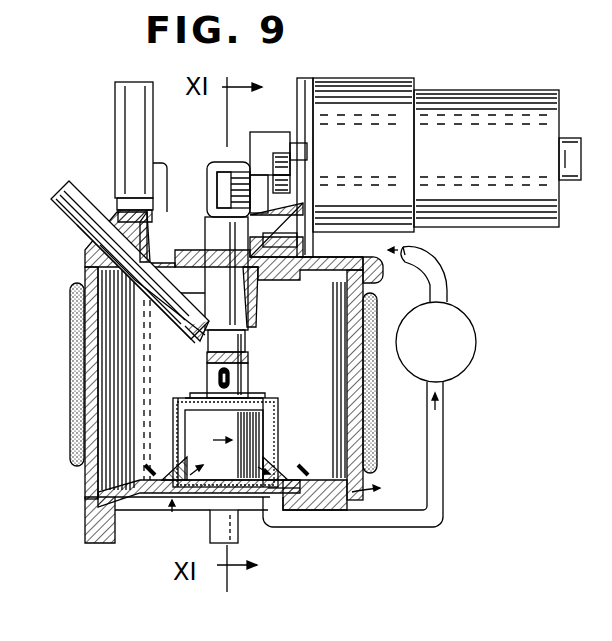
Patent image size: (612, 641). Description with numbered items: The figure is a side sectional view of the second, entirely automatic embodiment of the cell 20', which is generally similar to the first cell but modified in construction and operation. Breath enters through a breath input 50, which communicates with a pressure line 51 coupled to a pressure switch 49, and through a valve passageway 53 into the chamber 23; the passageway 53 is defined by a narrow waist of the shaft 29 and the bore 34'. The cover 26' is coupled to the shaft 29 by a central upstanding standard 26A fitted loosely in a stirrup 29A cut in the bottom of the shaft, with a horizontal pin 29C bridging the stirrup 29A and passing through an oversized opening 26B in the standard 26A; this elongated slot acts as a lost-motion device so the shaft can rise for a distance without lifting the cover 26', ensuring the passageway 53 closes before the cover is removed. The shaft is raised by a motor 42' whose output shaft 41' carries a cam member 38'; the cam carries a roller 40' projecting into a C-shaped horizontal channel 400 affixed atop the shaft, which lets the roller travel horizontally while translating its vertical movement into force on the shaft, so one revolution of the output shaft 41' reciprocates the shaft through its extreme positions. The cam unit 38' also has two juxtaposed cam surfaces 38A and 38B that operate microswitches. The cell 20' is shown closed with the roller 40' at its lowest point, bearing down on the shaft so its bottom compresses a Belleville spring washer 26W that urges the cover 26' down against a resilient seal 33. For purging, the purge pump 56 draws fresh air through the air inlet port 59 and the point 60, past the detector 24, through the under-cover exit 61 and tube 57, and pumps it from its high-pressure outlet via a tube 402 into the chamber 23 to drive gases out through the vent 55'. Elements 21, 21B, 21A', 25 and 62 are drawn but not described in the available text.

The pressure switch 49 is at (132, 99).
The breath input 50 is at (75, 193).
The pressure line 51 is at (96, 243).
The shaft 29 is at (168, 312).
The valve passageway 53 is at (196, 333).
The chamber 23 is at (107, 323).
The seal 62 is at (74, 452).
The automatic cell 20' is at (171, 511).
The bottom cover 21A' is at (177, 540).
The air inlet port 59 is at (165, 505).
The point 60 is at (190, 500).
The outlet 25 is at (230, 543).
The under-cover exit 61 is at (270, 505).
The resilient seal 33 is at (310, 505).
The vent 55' is at (353, 493).
The tube 57 is at (440, 402).
The purge pump 56 is at (470, 345).
The tube 402 is at (422, 262).
The housing 21 is at (363, 402).
The detector 24 is at (300, 424).
The cover 26' is at (361, 383).
The housing top 21B is at (343, 253).
The motor 42' is at (447, 141).
The output shaft 41' is at (315, 152).
The cam member 38' is at (271, 175).
The cam surface 38B is at (297, 170).
The cam surface 38A is at (300, 192).
The roller 40' is at (218, 158).
The C-shaped horizontal channel 400 is at (206, 186).
The bore 34' is at (247, 273).
The stirrup 29A is at (248, 355).
The oversized opening 26B is at (248, 378).
The central upstanding standard 26A is at (248, 390).
The horizontal pin 29C is at (217, 386).
The Belleville spring washer 26W is at (195, 405).